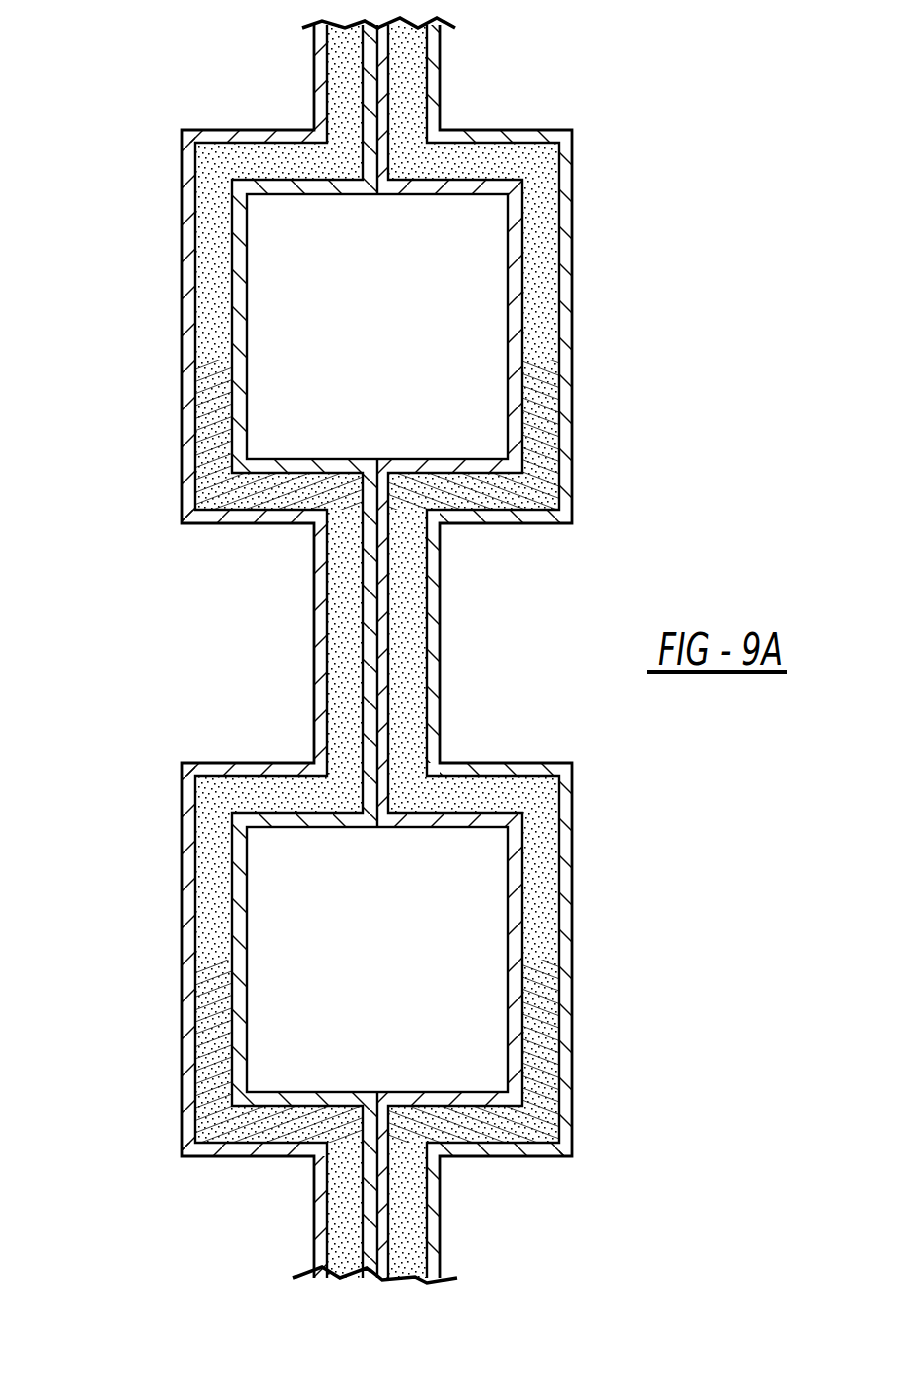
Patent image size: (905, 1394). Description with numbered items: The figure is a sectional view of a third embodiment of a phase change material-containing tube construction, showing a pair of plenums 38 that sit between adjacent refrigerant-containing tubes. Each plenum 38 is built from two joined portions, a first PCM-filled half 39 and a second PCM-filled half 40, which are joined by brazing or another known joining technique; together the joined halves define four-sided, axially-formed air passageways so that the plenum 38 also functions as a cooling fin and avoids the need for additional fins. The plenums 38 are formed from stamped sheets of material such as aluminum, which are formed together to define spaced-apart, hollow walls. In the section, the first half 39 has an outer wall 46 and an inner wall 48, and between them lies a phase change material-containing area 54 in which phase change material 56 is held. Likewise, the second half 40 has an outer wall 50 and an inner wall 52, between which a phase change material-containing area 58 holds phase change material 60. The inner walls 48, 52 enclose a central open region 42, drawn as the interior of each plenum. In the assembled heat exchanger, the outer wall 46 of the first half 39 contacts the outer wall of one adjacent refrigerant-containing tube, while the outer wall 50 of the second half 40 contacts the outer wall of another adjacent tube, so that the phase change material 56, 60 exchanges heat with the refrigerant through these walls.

The plenum 38 is at (183, 162).
The first PCM-filled half 39 is at (184, 450).
The second PCM-filled half 40 is at (490, 525).
The inner cavity 42 is at (462, 330).
The outer wall 46 is at (183, 228).
The inner wall 48 is at (247, 256).
The outer wall 50 is at (573, 418).
The inner wall 52 is at (508, 272).
The phase change material-containing area 54 is at (213, 390).
The phase change material 56 is at (213, 268).
The phase change material-containing area 58 is at (462, 160).
The phase change material 60 is at (542, 182).